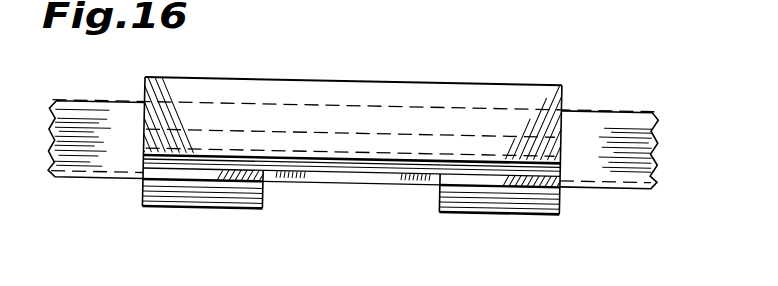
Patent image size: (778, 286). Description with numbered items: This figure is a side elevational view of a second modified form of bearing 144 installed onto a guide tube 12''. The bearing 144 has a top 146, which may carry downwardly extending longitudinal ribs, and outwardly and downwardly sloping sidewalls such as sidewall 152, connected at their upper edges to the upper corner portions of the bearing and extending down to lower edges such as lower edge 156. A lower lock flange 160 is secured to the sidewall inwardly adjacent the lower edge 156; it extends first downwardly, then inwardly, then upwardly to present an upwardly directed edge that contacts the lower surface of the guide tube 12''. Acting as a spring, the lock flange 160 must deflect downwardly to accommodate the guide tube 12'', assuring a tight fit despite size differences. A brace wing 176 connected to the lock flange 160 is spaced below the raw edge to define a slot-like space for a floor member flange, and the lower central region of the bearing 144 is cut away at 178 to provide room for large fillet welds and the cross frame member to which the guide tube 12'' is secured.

The bearing 144 is at (285, 77).
The top 146 is at (405, 77).
The sidewall 152 is at (218, 137).
The lower edge 156 is at (397, 185).
The lock flange 160 is at (180, 211).
The brace wing 176 is at (288, 187).
The cut away 178 is at (330, 191).
The guide tube 12'' is at (609, 177).